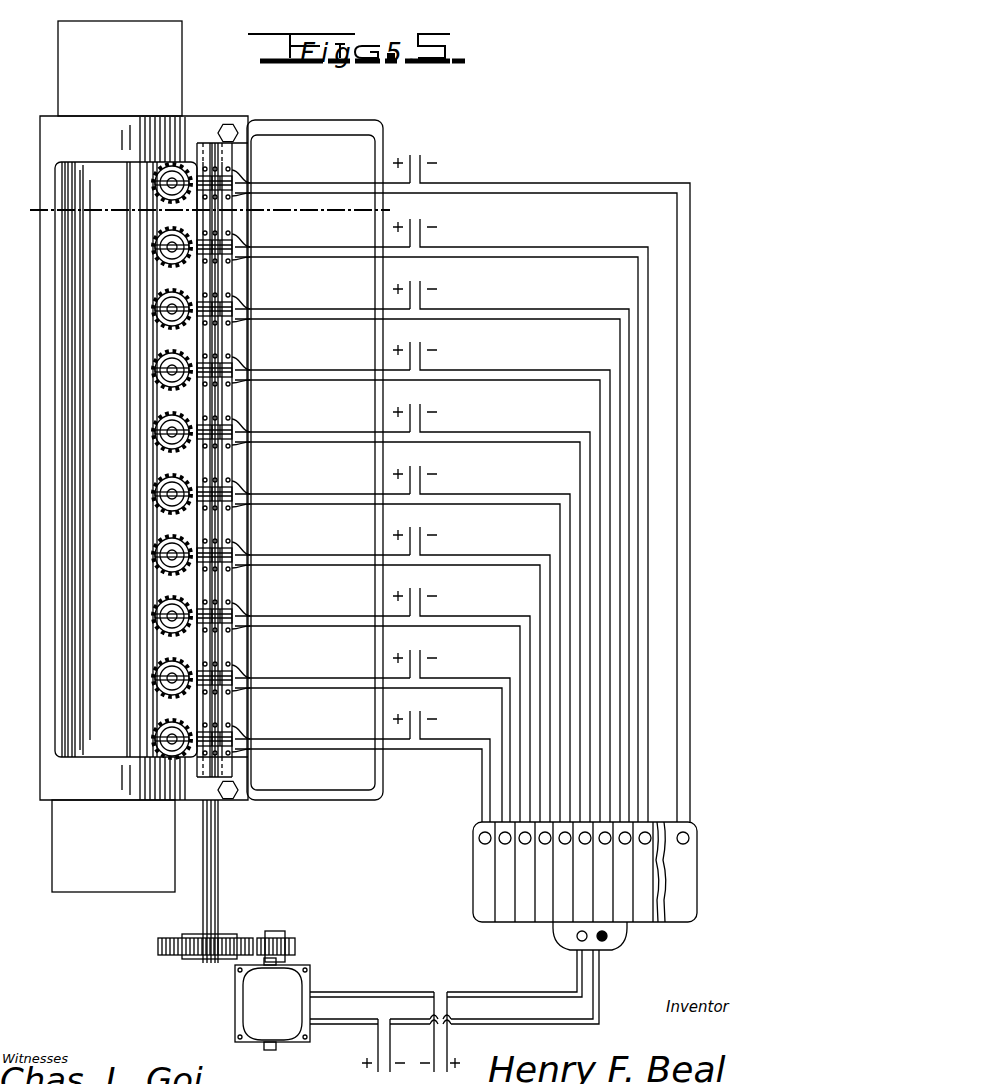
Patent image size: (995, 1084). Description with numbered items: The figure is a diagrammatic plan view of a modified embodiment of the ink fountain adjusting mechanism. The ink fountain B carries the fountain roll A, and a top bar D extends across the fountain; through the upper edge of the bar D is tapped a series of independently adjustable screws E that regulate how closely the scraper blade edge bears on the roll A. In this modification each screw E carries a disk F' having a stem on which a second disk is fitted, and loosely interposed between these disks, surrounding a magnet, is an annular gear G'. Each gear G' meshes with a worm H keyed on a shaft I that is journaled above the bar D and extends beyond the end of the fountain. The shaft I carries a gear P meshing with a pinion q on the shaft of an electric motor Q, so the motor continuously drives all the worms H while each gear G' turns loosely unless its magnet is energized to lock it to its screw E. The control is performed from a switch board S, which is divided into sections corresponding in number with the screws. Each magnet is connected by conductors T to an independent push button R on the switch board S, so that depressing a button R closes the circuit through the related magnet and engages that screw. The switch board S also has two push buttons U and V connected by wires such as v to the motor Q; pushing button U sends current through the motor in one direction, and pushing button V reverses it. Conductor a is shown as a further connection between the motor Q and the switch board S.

The fountain roll A is at (210, 456).
The ink fountain B is at (352, 128).
The top bar D is at (268, 763).
The screws E is at (157, 603).
The disk F' is at (175, 550).
The annular gear G' is at (173, 554).
The worm H is at (238, 728).
The shaft I is at (250, 862).
The conductors T is at (446, 758).
The push buttons R is at (718, 841).
The switch board S is at (473, 893).
The push button U is at (577, 938).
The push button V is at (607, 936).
The gear P is at (173, 953).
The pinion q is at (295, 942).
The electric motor Q is at (247, 1012).
The conductor a is at (485, 1000).
The wire v is at (497, 1028).